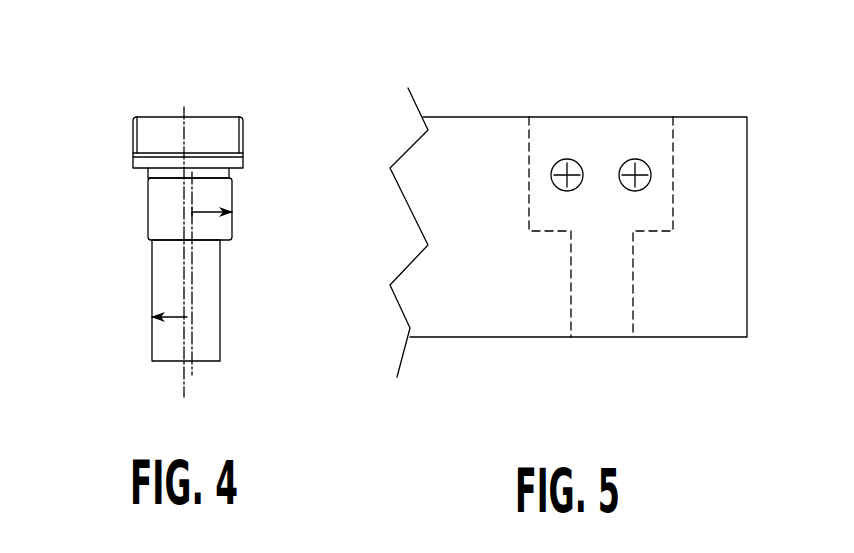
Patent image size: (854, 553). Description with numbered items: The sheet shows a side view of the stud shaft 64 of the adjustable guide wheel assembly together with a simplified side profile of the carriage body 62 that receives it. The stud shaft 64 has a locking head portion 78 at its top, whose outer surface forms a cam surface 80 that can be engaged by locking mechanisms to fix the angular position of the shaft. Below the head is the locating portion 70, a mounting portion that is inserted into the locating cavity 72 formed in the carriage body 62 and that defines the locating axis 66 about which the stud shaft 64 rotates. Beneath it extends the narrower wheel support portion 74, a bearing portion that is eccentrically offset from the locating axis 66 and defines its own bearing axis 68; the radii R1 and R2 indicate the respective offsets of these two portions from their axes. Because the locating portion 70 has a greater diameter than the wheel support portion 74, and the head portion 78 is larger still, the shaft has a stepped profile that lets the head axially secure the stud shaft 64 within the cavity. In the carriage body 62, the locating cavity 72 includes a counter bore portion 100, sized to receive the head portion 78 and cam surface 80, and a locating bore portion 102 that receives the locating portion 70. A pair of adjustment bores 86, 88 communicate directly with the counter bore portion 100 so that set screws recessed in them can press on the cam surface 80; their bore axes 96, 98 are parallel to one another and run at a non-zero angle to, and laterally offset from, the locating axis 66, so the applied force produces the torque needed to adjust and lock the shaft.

In FIG. 4, the stud shaft 64 is at (200, 203).
In FIG. 4, the cam surface 80 is at (157, 128).
In FIG. 4, the locking head portion 78 is at (237, 114).
In FIG. 4, the locating portion 70 is at (253, 222).
In FIG. 4, the wheel support portion 74 is at (232, 320).
In FIG. 4, the locating axis 66 is at (192, 373).
In FIG. 4, the bearing axis 68 is at (185, 381).
In FIG. 4, the first radius R1 is at (213, 212).
In FIG. 4, the second radius R2 is at (177, 317).
In FIG. 5, the carriage body 62 is at (747, 130).
In FIG. 5, the locating cavity 72 is at (599, 195).
In FIG. 5, the counter bore portion 100 is at (543, 130).
In FIG. 5, the locating bore portion 102 is at (618, 283).
In FIG. 5, the adjustment bore axis 96 is at (527, 183).
In FIG. 5, the adjustment bore 86 is at (555, 183).
In FIG. 5, the adjustment bore axis 98 is at (672, 180).
In FIG. 5, the adjustment bore 88 is at (647, 184).